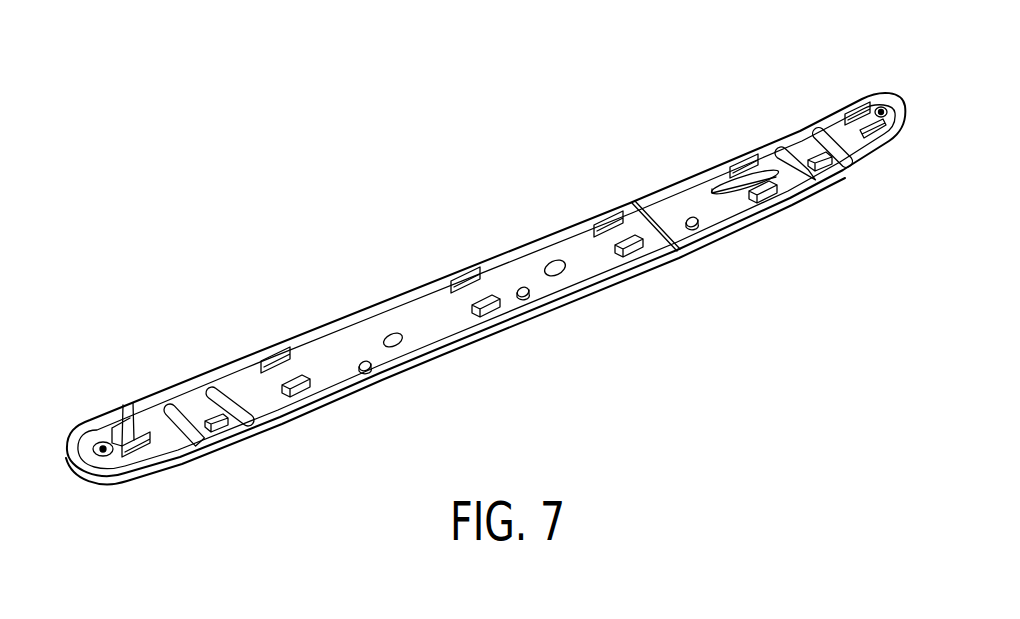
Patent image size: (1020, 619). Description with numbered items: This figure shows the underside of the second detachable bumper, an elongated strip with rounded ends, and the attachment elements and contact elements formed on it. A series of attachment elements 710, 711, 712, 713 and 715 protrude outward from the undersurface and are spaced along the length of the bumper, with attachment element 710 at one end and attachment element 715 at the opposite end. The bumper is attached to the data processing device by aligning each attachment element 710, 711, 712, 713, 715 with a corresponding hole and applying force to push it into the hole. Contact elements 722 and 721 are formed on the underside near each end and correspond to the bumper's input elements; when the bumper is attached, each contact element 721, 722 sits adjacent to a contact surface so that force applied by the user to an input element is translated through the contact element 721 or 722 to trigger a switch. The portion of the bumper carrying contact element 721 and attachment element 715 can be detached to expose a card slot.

The attachment element 710 is at (133, 403).
The attachment element 711 is at (295, 372).
The attachment element 712 is at (487, 296).
The attachment element 713 is at (632, 206).
The attachment element 715 is at (862, 98).
The contact element 721 is at (802, 142).
The contact element 722 is at (195, 405).